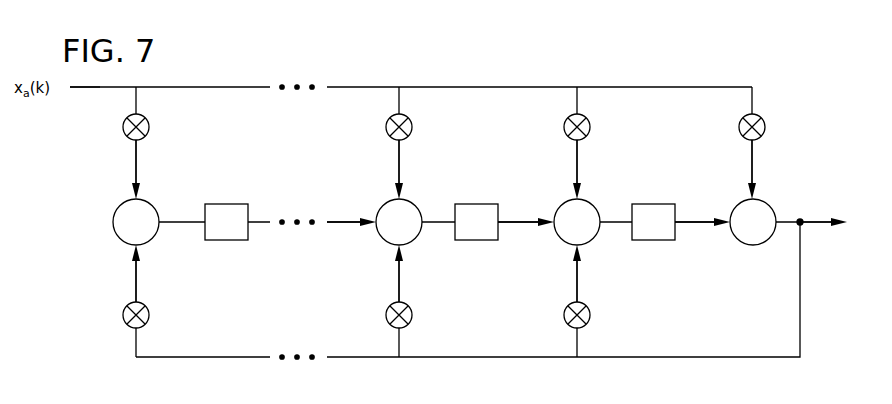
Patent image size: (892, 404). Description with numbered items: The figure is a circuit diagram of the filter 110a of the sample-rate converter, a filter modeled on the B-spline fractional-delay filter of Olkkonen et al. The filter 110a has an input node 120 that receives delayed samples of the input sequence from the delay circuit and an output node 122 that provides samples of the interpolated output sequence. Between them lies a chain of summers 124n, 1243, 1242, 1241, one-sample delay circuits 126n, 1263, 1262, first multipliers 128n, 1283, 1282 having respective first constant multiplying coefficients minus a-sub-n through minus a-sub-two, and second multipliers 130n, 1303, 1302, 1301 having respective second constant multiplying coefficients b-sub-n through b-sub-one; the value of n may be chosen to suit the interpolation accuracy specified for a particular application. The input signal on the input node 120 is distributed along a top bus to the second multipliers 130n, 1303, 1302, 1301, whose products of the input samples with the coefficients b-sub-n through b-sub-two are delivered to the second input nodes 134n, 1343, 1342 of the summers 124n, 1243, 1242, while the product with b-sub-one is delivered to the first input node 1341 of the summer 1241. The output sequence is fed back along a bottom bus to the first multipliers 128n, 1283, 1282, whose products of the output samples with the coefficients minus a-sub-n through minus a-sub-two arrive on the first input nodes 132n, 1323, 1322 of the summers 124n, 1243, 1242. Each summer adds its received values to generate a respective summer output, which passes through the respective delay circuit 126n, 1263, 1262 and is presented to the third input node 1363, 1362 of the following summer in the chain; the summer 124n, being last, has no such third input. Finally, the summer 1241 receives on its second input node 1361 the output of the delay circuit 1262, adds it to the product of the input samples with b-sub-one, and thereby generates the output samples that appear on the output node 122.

The filter 110a is at (625, 58).
The input node 120 is at (76, 92).
The output node 122 is at (805, 228).
The summer 124n is at (150, 200).
The summer 1243 is at (412, 200).
The summer 1242 is at (590, 200).
The summer 1241 is at (748, 246).
The one-sample delay circuit 126n is at (236, 240).
The one-sample delay circuit 1263 is at (485, 240).
The one-sample delay circuit 1262 is at (660, 240).
The first multiplier 128n is at (149, 320).
The first multiplier 1283 is at (412, 320).
The first multiplier 1282 is at (590, 320).
The second multiplier 130n is at (124, 132).
The second multiplier 1303 is at (388, 133).
The second multiplier 1302 is at (566, 133).
The second multiplier 1301 is at (741, 133).
The first input node 132n is at (126, 242).
The first input node 1323 is at (388, 242).
The first input node 1322 is at (566, 242).
The second input node 134n is at (128, 200).
The second input node 1343 is at (392, 200).
The second input node 1342 is at (570, 200).
The first input node 1341 is at (746, 200).
The third input node 1363 is at (380, 212).
The third input node 1362 is at (558, 212).
The second input node 1361 is at (735, 212).